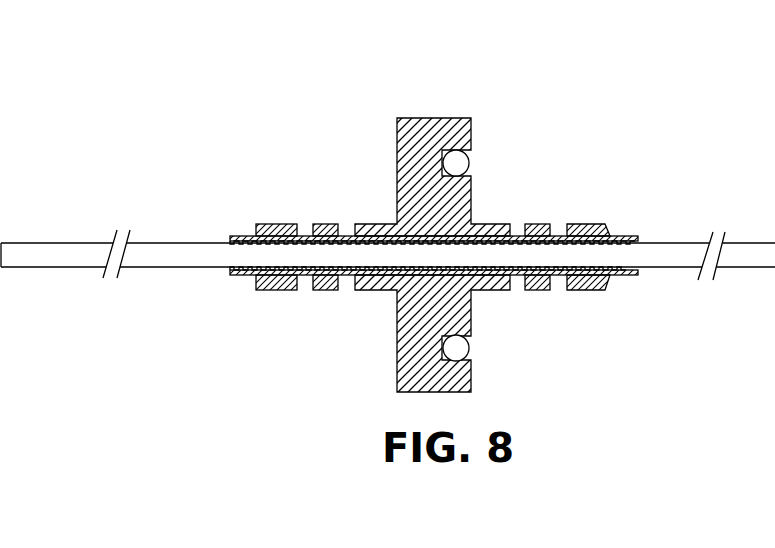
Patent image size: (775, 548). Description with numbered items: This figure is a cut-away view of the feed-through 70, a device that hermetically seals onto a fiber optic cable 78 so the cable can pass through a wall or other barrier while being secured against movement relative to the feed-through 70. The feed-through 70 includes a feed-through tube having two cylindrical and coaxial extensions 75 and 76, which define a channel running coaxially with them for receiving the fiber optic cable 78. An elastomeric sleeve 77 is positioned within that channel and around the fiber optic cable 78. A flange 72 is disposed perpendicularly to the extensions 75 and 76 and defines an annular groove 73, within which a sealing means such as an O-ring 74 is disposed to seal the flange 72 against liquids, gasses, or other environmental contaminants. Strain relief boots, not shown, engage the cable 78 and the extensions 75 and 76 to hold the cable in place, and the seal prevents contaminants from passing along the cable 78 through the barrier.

The feed-through 70 is at (469, 233).
The flange 72 is at (397, 163).
The annular groove 73 is at (471, 355).
The O-ring 74 is at (505, 318).
The extension 75 is at (638, 240).
The extension 76 is at (278, 284).
The elastomeric sleeve 77 is at (630, 276).
The fiber optic cable 78 is at (43, 268).